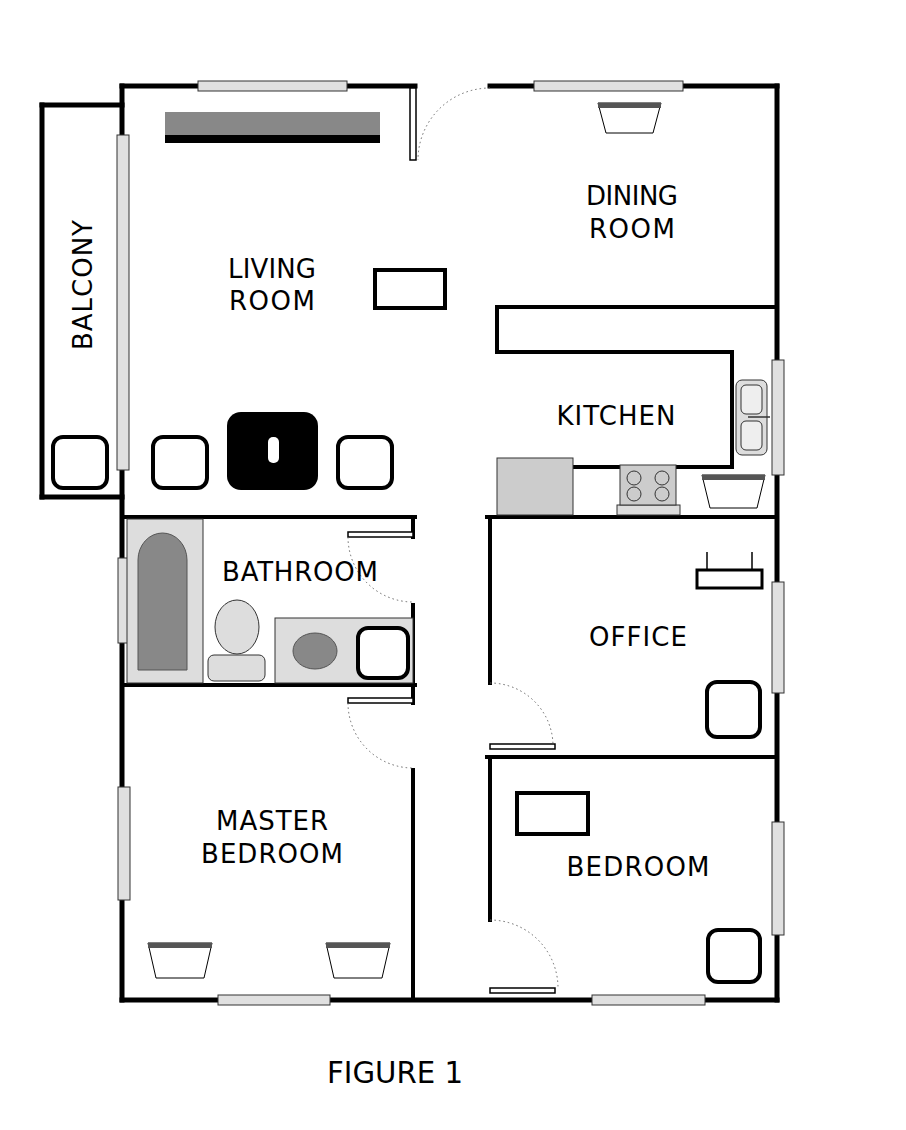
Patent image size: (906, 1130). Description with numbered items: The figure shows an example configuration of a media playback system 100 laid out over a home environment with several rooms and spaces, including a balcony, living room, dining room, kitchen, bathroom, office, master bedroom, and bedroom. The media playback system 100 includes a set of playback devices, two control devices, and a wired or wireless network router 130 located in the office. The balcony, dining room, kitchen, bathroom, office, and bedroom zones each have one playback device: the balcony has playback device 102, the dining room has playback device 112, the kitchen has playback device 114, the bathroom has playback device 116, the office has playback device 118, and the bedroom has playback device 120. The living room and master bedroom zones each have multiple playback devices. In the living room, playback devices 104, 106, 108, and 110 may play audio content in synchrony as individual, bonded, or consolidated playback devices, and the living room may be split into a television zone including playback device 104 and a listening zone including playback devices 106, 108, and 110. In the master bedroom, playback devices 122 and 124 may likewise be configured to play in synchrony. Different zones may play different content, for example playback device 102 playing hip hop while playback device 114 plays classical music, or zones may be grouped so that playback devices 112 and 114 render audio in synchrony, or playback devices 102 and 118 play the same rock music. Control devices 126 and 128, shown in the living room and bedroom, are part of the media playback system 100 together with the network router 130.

The media playback system 100 is at (495, 50).
The playback device 102 is at (80, 462).
The playback device 104 is at (272, 127).
The playback device 106 is at (180, 462).
The playback device 108 is at (365, 462).
The playback device 110 is at (272, 451).
The playback device 112 is at (629, 118).
The playback device 114 is at (733, 491).
The playback device 116 is at (383, 653).
The playback device 118 is at (733, 709).
The playback device 120 is at (734, 956).
The playback device 122 is at (180, 960).
The playback device 124 is at (358, 960).
The control device 126 is at (410, 289).
The control device 128 is at (552, 813).
The network router 130 is at (697, 580).